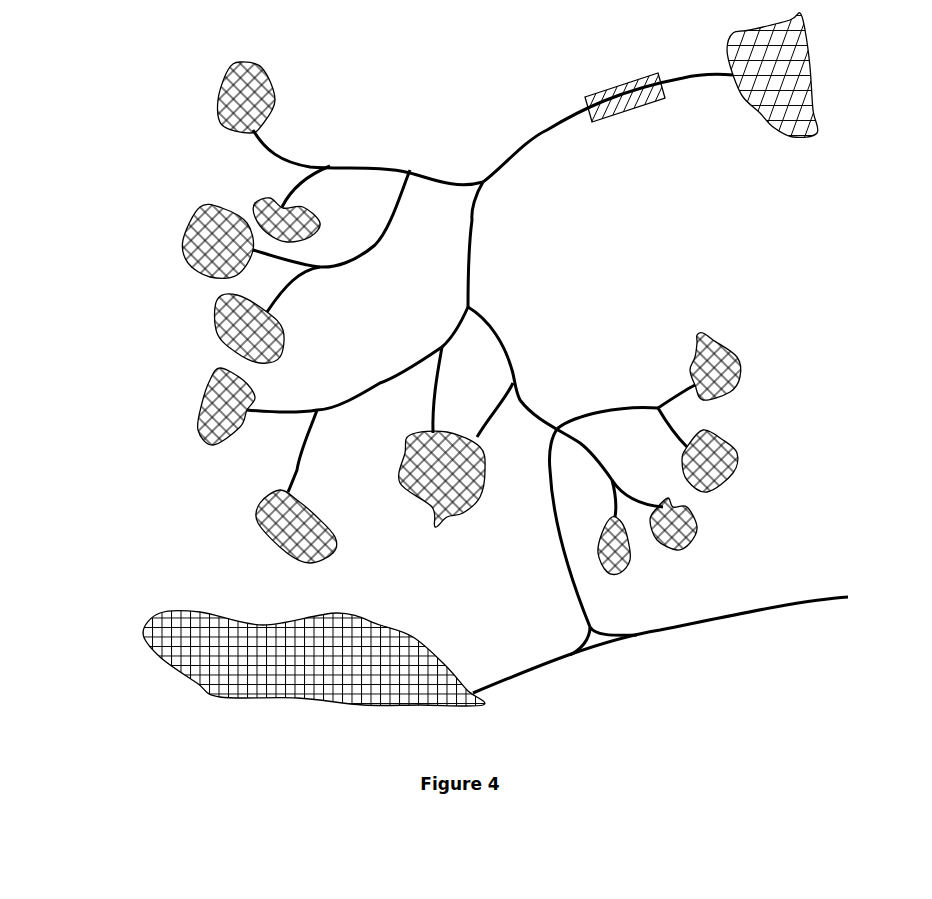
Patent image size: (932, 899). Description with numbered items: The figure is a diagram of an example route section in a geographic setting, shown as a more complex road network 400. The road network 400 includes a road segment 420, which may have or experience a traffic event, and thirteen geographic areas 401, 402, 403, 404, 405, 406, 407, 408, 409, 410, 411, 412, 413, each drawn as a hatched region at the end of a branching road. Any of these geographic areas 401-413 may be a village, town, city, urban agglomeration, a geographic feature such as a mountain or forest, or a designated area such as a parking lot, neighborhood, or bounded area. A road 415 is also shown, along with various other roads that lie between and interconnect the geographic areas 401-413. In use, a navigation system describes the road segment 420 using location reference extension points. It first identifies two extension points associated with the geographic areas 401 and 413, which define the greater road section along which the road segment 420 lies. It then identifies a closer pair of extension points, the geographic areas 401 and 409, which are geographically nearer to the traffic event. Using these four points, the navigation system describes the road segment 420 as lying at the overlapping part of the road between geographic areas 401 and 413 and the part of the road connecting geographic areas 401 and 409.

The road network 400 is at (446, 52).
The geographic area 401 is at (797, 137).
The geographic area 402 is at (220, 108).
The geographic area 403 is at (318, 215).
The geographic area 404 is at (187, 233).
The geographic area 405 is at (217, 310).
The geographic area 406 is at (200, 407).
The geographic area 407 is at (270, 538).
The geographic area 408 is at (458, 517).
The geographic area 409 is at (740, 365).
The geographic area 410 is at (737, 450).
The geographic area 411 is at (697, 528).
The geographic area 412 is at (628, 568).
The geographic area 413 is at (314, 658).
The road 415 is at (770, 610).
The road segment 420 is at (592, 95).